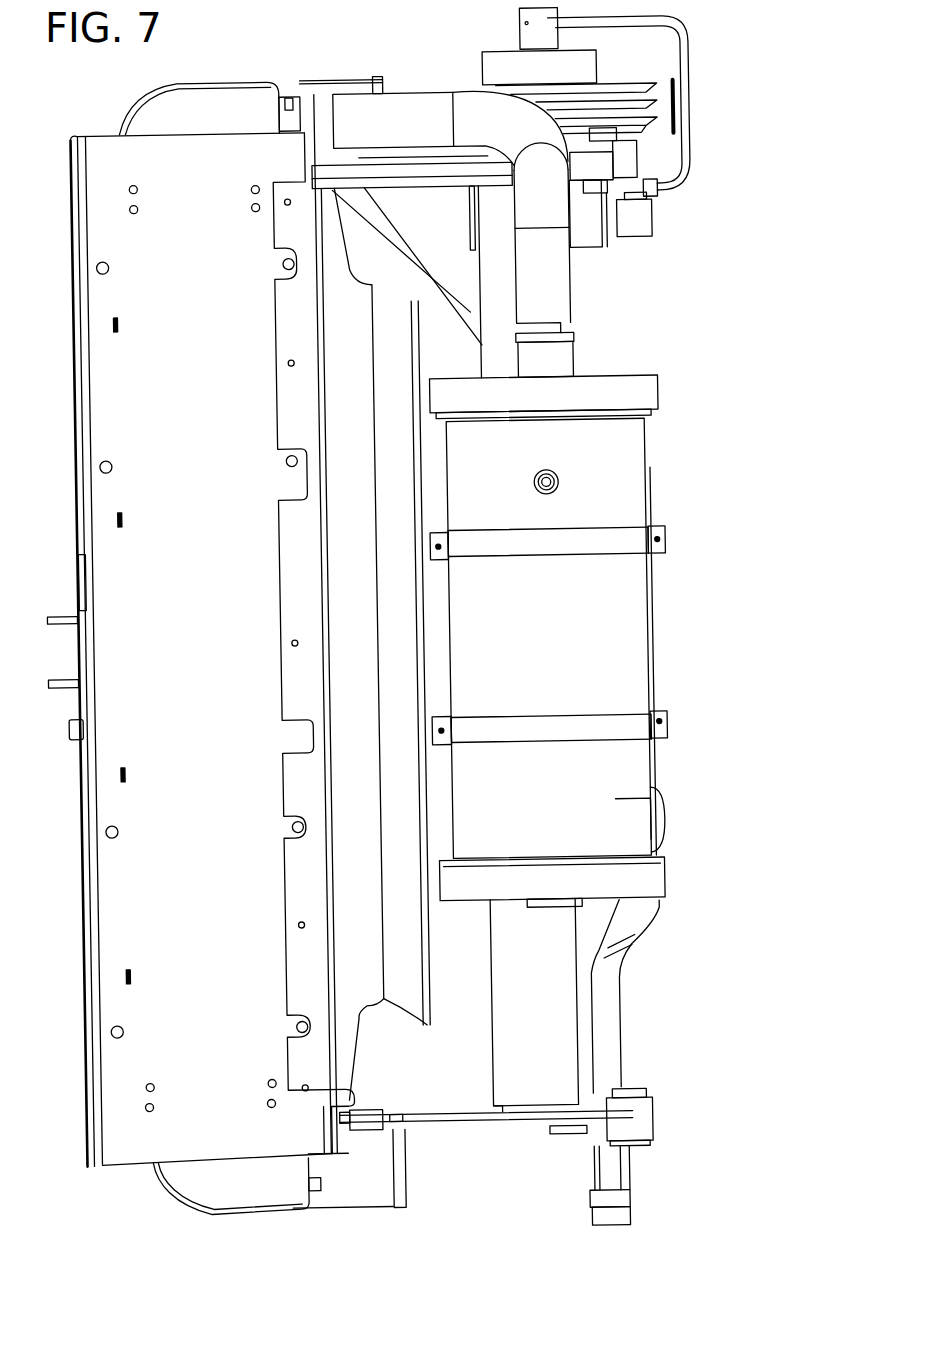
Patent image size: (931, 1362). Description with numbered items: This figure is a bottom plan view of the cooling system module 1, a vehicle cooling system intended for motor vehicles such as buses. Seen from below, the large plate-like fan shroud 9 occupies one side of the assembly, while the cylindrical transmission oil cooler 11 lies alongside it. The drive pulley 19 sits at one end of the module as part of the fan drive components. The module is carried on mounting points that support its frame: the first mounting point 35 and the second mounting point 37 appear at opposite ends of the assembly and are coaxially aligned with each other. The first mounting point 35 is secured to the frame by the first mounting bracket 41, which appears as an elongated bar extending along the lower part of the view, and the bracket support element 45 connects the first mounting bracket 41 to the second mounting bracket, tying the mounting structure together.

The cooling system module 1 is at (800, 81).
The fan shroud 9 is at (332, 405).
The transmission oil cooler 11 is at (630, 669).
The drive pulley 19 is at (532, 92).
The first mounting point 35 is at (659, 1116).
The second mounting point 37 is at (655, 160).
The first mounting bracket 41 is at (432, 1121).
The bracket support element 45 is at (543, 938).